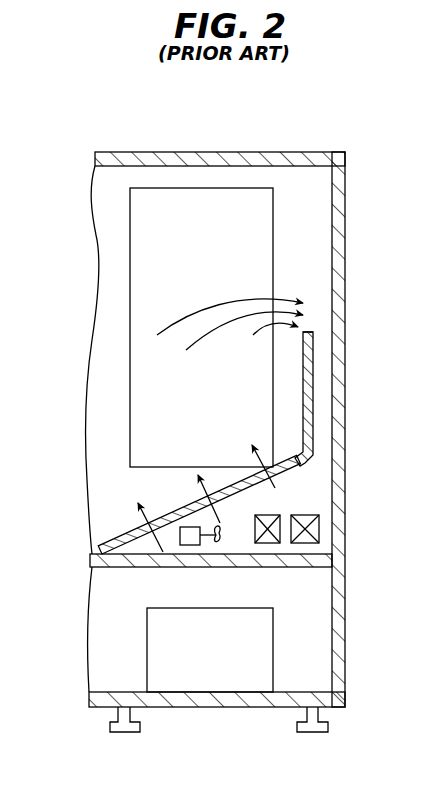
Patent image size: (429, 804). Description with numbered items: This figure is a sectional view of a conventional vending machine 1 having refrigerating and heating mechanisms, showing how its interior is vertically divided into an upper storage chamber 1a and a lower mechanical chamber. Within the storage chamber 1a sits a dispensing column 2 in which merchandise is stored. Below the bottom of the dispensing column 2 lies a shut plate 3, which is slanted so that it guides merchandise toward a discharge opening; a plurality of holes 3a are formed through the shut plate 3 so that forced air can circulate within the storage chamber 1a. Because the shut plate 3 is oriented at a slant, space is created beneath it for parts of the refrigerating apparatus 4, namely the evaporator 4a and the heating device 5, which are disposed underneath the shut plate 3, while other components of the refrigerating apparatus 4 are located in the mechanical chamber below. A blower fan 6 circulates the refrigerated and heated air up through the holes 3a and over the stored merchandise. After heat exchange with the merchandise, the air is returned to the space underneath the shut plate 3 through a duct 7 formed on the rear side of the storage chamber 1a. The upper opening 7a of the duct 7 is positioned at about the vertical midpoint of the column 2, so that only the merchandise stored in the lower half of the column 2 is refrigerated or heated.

The vending machine 1 is at (318, 153).
The storage chamber 1a is at (322, 273).
The dispensing column 2 is at (260, 238).
The shut plate 3 is at (126, 540).
The holes 3a is at (202, 494).
The refrigerating apparatus 4 is at (268, 660).
The evaporator 4a is at (272, 514).
The heating device 5 is at (312, 513).
The blower fan 6 is at (196, 548).
The duct 7 is at (322, 390).
The upper opening 7a is at (318, 332).